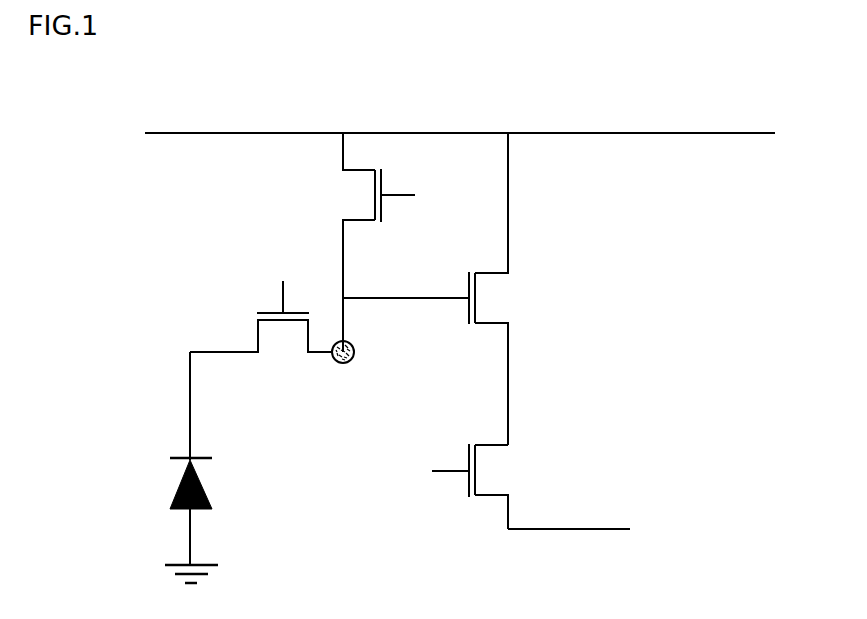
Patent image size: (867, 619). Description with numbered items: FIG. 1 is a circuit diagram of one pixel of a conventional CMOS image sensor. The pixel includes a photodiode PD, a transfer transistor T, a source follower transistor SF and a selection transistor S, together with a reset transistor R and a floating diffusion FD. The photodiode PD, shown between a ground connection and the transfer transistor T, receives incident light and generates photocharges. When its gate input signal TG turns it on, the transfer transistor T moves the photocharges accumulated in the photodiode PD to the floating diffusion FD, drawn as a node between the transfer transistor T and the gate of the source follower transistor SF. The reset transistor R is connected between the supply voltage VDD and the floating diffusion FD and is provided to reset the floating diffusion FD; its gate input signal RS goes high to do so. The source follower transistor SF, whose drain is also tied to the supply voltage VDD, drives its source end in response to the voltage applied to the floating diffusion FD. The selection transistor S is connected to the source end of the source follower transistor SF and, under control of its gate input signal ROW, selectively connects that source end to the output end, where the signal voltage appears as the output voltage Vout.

The supply voltage VDD is at (451, 122).
The reset transistor R is at (362, 242).
The gate input signal of the reset transistor RS is at (420, 196).
The source follower transistor SF is at (442, 289).
The selection transistor S is at (499, 486).
The gate input signal of the selection transistor ROW is at (420, 472).
The output voltage Vout is at (591, 529).
The transfer transistor T is at (261, 351).
The gate input signal of the transfer transistor TG is at (281, 285).
The floating diffusion FD is at (360, 352).
The photodiode PD is at (166, 467).